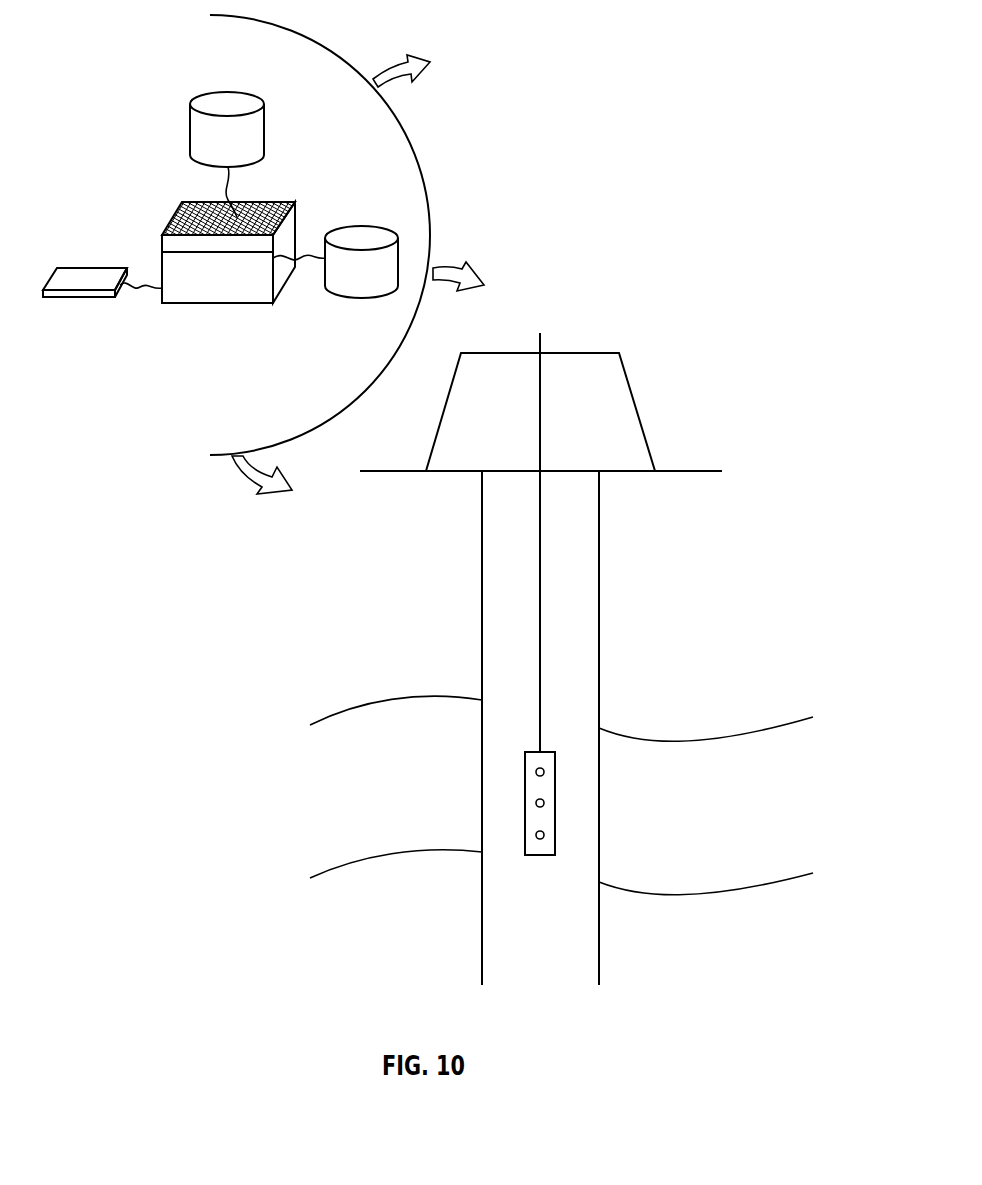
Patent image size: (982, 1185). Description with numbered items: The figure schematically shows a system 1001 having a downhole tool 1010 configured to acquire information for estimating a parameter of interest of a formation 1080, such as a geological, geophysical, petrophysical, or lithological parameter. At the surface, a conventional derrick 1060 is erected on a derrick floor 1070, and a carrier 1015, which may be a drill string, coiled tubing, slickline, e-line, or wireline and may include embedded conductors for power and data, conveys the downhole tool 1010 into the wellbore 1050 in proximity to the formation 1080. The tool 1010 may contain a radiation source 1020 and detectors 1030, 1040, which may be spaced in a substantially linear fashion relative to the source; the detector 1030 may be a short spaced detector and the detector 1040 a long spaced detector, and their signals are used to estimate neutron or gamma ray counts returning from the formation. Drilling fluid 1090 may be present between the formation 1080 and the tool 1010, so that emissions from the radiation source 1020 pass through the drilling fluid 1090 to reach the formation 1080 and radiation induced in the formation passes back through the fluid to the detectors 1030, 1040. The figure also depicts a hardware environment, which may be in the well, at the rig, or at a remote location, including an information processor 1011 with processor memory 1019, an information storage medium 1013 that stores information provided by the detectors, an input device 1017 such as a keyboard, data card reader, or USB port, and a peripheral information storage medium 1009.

The system 1001 is at (678, 267).
The peripheral information storage medium 1009 is at (358, 300).
The downhole tool 1010 is at (525, 758).
The information processor 1011 is at (188, 305).
The information storage medium 1013 is at (190, 130).
The carrier 1015 is at (541, 640).
The input device 1017 is at (78, 300).
The processor memory 1019 is at (172, 217).
The radiation source 1020 is at (545, 772).
The detector 1030 is at (545, 803).
The detector 1040 is at (545, 835).
The wellbore 1050 is at (600, 522).
The derrick 1060 is at (638, 410).
The derrick floor 1070 is at (633, 472).
The formation 1080 is at (690, 755).
The drilling fluid 1090 is at (500, 843).